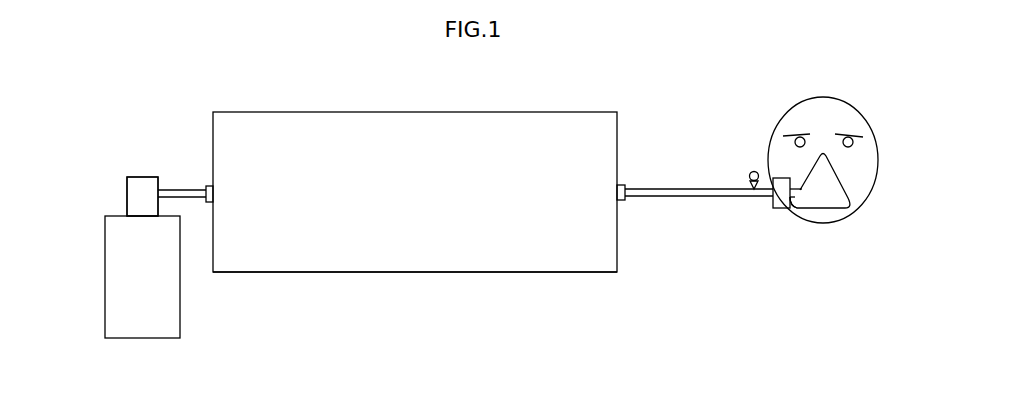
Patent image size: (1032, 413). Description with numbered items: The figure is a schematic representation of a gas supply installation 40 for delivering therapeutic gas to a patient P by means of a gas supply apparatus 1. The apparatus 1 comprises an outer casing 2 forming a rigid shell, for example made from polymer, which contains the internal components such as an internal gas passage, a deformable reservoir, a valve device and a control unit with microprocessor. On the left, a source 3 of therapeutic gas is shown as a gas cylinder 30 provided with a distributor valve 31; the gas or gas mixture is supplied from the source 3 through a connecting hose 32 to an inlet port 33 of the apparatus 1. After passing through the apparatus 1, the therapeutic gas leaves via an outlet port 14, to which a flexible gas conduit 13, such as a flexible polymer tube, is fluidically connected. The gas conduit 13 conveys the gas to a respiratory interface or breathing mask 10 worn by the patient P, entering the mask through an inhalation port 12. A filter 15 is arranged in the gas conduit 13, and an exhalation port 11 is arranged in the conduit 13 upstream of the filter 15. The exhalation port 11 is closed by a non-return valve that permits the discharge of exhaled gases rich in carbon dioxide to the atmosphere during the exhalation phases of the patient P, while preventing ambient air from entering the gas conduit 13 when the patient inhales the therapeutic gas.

The gas supply apparatus 1 is at (403, 108).
The outer casing 2 is at (247, 273).
The source of therapeutic gas 3 is at (99, 168).
The gas cylinder 30 is at (133, 250).
The distributor valve 31 is at (143, 190).
The connecting hose 32 is at (180, 188).
The inlet port 33 is at (207, 183).
The outlet port 14 is at (627, 188).
The flexible gas conduit 13 is at (700, 188).
The exhalation port 11 is at (752, 173).
The filter 15 is at (780, 209).
The inhalation port 12 is at (801, 199).
The breathing mask 10 is at (840, 170).
The patient P is at (863, 95).
The gas supply installation 40 is at (477, 333).